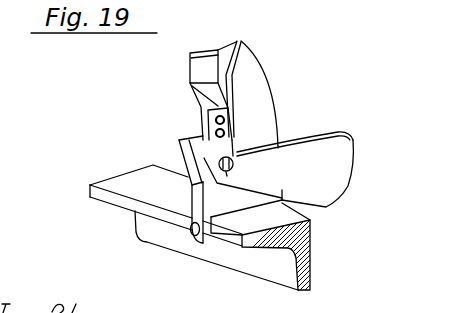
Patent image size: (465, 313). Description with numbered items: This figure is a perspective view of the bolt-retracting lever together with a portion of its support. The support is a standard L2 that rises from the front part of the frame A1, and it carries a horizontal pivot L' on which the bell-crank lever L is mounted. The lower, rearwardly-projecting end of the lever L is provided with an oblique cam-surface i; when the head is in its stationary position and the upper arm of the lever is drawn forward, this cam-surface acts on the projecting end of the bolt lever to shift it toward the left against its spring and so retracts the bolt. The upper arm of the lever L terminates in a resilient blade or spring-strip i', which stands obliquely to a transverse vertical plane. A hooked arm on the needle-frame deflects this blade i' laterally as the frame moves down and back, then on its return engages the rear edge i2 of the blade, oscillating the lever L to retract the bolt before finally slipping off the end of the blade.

The frame A1 is at (300, 246).
The bell-crank lever L is at (233, 233).
The horizontal pivot L' is at (172, 163).
The rear edge of the blade i2 is at (190, 72).
The resilient blade i' is at (248, 78).
The standard L2 is at (267, 129).
The oblique cam-surface i is at (321, 173).